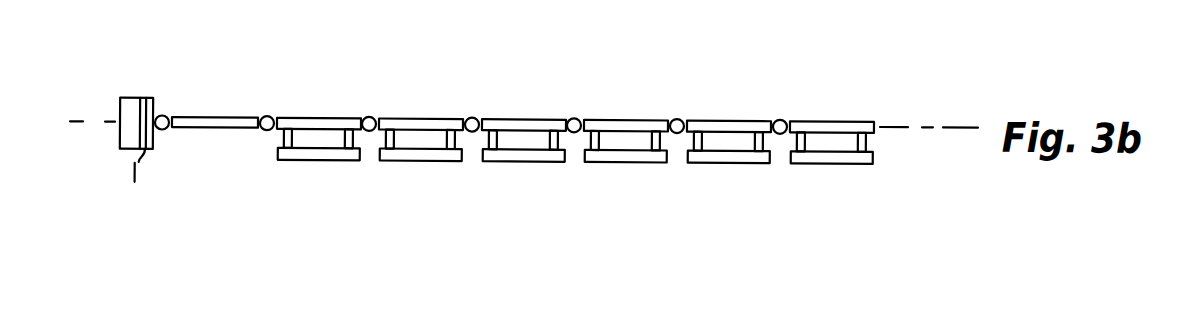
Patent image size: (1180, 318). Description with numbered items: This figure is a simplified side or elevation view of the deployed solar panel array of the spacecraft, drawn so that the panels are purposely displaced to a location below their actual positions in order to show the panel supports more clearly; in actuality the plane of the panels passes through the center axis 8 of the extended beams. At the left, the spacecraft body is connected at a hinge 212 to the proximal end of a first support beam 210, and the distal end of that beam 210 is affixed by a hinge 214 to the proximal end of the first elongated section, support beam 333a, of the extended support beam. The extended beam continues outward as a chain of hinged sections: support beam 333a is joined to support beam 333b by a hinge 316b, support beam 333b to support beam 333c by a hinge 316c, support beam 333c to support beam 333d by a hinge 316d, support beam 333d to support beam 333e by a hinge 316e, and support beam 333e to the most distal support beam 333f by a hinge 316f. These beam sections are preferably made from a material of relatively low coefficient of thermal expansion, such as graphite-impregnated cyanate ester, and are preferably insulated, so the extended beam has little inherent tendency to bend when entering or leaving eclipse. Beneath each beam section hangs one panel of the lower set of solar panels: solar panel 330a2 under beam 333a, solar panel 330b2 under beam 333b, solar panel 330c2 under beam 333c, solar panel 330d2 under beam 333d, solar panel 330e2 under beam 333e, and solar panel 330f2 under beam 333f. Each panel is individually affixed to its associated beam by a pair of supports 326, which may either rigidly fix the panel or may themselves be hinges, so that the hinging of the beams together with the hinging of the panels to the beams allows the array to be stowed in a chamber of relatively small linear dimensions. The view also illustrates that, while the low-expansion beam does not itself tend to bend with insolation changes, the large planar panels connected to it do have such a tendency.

The center axis 8 is at (960, 121).
The first support beam 210 is at (217, 128).
The hinge 212 is at (173, 89).
The hinge 214 is at (267, 116).
The hinge 316b is at (369, 116).
The hinge 316c is at (472, 116).
The hinge 316d is at (574, 116).
The hinge 316e is at (677, 116).
The hinge 316f is at (780, 116).
The support beam 333a is at (297, 91).
The support beam 333b is at (399, 91).
The support beam 333c is at (502, 91).
The support beam 333d is at (604, 91).
The support beam 333e is at (707, 91).
The support beam 333f is at (810, 91).
The solar panel 330a2 is at (284, 159).
The solar panel 330b2 is at (386, 159).
The solar panel 330c2 is at (489, 159).
The solar panel 330d2 is at (591, 159).
The solar panel 330e2 is at (694, 159).
The solar panel 330f2 is at (797, 159).
The support 326 is at (284, 138).